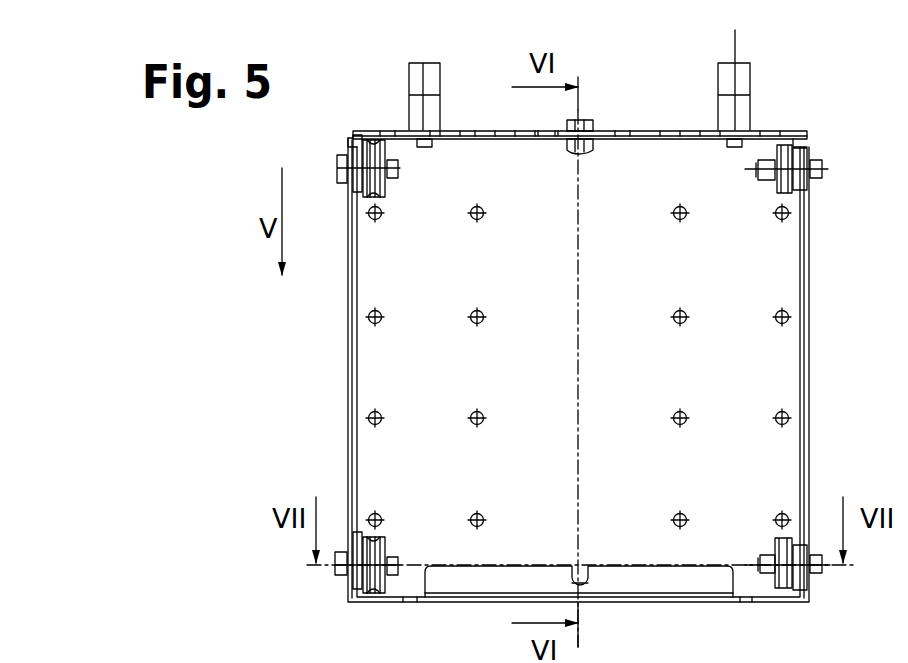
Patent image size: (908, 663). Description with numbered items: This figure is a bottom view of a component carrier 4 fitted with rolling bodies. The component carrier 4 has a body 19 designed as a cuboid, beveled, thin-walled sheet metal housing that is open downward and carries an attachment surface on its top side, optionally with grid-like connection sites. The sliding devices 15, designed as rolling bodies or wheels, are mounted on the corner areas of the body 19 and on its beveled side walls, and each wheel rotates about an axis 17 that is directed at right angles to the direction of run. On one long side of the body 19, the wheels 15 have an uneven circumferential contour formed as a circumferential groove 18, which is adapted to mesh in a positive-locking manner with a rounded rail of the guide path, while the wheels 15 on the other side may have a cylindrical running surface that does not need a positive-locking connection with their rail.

The component carrier 4 is at (349, 328).
The sliding devices 15 is at (582, 334).
The axis 17 is at (815, 160).
The circumferential groove 18 is at (375, 150).
The body 19 is at (746, 374).